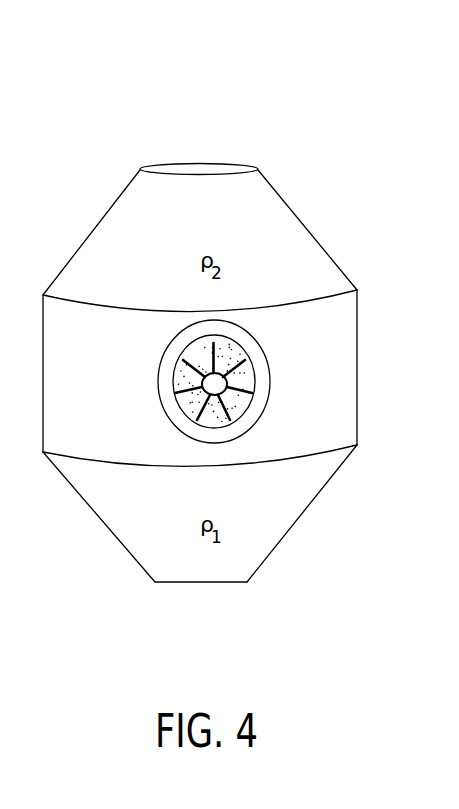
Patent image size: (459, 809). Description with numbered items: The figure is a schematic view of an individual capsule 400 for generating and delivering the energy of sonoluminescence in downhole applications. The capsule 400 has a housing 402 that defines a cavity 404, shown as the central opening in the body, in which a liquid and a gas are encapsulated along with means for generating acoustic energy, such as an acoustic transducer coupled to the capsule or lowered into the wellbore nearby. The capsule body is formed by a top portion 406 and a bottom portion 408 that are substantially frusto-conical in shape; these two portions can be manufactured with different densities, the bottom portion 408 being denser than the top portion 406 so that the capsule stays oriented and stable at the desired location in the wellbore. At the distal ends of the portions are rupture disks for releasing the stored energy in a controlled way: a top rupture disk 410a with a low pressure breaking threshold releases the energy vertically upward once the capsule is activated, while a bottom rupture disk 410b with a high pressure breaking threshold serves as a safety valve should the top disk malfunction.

The capsule 400 is at (181, 78).
The housing 402 is at (330, 253).
The cavity 404 is at (175, 375).
The top portion 406 is at (88, 259).
The bottom portion 408 is at (180, 549).
The top rupture disk 410a is at (180, 168).
The bottom rupture disk 410b is at (226, 583).